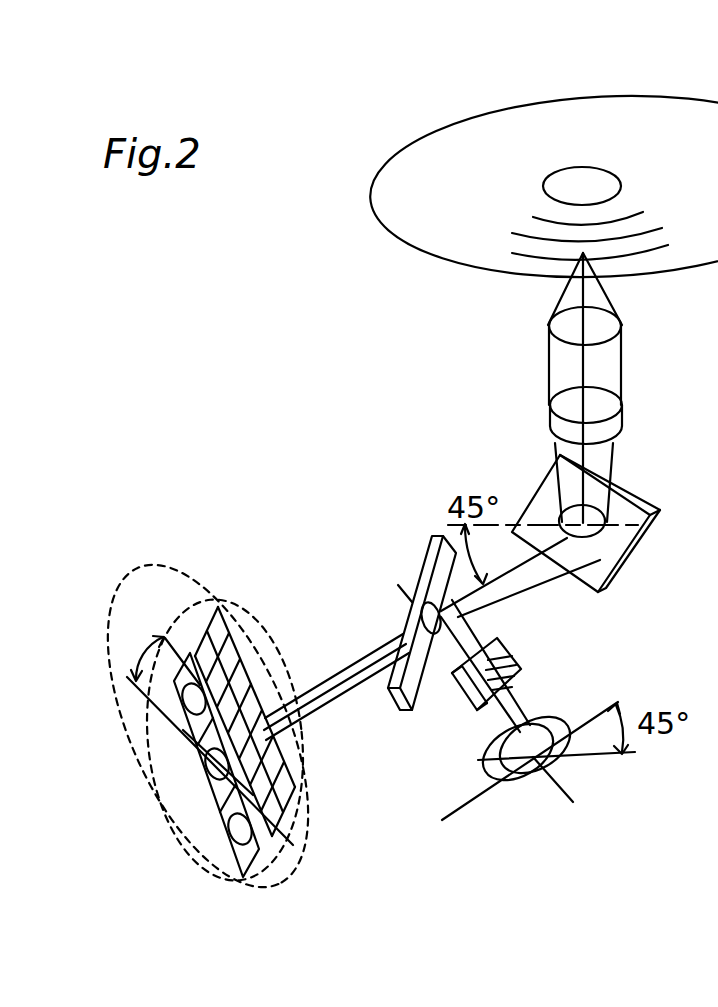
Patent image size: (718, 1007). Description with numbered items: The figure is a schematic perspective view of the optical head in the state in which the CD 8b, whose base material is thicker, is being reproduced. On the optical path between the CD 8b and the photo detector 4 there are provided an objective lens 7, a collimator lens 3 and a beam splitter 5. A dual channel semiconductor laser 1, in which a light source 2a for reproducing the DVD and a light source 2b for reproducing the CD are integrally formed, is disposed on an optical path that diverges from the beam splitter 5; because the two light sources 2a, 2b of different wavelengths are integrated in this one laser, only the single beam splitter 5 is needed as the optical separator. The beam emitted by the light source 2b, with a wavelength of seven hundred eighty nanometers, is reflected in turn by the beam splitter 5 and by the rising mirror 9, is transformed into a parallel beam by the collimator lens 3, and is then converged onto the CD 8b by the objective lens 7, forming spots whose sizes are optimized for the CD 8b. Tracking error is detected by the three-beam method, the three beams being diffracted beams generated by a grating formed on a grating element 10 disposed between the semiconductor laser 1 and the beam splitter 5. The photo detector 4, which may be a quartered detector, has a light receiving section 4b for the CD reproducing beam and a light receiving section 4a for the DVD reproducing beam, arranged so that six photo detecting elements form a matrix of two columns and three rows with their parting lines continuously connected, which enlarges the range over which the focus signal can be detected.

The dual channel semiconductor laser 1 is at (512, 783).
The light source for reproducing the DVD 2a is at (540, 758).
The light source for reproducing the CD 2b is at (555, 762).
The collimator lens 3 is at (627, 420).
The photo detector 4 is at (123, 595).
The light receiving section for receiving the DVD reproducing beam 4a is at (208, 603).
The light receiving section for receiving the CD reproducing beam 4b is at (163, 767).
The beam splitter 5 is at (432, 536).
The objective lens 7 is at (536, 330).
The CD 8b is at (716, 116).
The rising mirror 9 is at (615, 582).
The grating element 10 is at (523, 668).